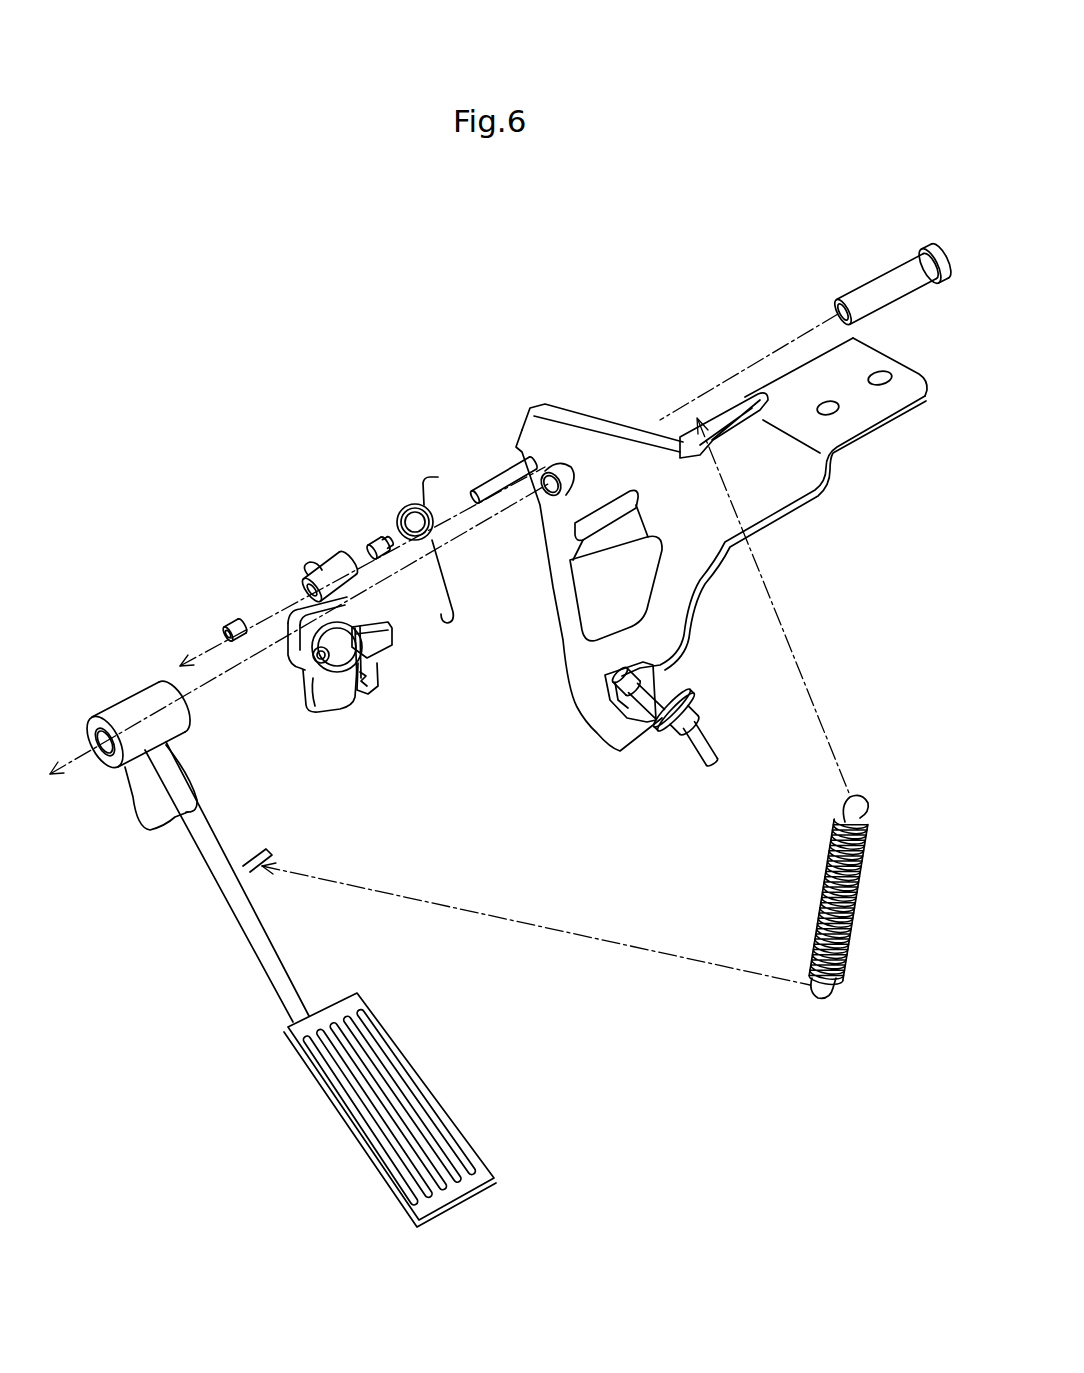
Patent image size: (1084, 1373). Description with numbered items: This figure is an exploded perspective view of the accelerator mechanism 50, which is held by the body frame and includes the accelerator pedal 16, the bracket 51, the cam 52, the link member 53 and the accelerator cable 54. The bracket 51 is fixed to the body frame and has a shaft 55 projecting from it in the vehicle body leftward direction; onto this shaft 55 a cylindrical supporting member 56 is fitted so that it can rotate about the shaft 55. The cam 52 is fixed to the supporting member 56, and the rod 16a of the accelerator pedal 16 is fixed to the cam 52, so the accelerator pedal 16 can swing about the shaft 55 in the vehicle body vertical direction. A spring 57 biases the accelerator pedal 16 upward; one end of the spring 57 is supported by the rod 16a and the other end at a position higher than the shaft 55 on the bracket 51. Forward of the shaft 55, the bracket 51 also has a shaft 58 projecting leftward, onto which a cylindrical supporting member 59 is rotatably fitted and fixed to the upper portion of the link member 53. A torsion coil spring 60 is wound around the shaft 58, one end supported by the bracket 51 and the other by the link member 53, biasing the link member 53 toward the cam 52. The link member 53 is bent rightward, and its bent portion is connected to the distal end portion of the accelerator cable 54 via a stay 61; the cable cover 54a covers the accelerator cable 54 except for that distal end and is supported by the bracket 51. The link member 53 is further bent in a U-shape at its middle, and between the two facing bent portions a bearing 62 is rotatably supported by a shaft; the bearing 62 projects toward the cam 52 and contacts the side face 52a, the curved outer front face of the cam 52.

The accelerator mechanism 50 is at (288, 398).
The bracket 51 is at (572, 650).
The cam 52 is at (163, 822).
The side face 52a is at (127, 790).
The link member 53 is at (305, 700).
The accelerator cable 54 is at (713, 715).
The cable cover 54a is at (700, 745).
The shaft 55 is at (873, 290).
The cylindrical supporting member 56 is at (124, 712).
The spring 57 is at (862, 906).
The shaft 58 is at (500, 490).
The cylindrical supporting member 59 is at (335, 565).
The torsion coil spring 60 is at (408, 510).
The stay 61 is at (378, 688).
The bearing 62 is at (362, 686).
The accelerator pedal 16 is at (460, 1192).
The rod 16a is at (240, 920).